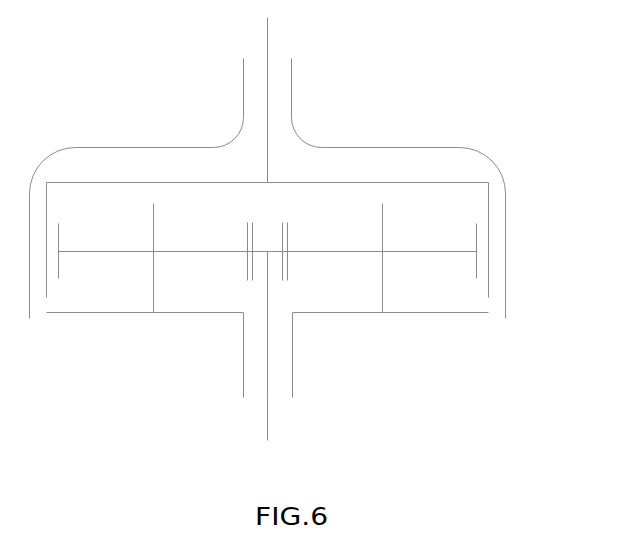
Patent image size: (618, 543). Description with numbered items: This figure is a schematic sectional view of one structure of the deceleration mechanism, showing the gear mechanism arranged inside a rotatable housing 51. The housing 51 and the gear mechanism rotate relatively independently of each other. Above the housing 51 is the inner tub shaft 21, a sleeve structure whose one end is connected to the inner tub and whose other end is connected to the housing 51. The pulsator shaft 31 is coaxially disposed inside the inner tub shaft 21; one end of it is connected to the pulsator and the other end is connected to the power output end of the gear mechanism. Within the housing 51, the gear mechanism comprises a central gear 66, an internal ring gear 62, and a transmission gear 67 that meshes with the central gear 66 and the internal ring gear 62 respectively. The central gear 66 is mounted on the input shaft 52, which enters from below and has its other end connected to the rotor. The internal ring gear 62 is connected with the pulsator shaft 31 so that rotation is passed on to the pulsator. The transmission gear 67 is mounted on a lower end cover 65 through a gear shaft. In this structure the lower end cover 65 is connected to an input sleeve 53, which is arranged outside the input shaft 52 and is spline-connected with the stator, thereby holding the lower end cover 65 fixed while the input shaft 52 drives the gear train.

The inner tub shaft 21 is at (291, 73).
The pulsator shaft 31 is at (267, 127).
The housing 51 is at (417, 147).
The input shaft 52 is at (267, 398).
The input sleeve 53 is at (243, 363).
The internal ring gear 62 is at (487, 280).
The lower end cover 65 is at (416, 312).
The central gear 66 is at (273, 253).
The transmission gear 67 is at (129, 251).